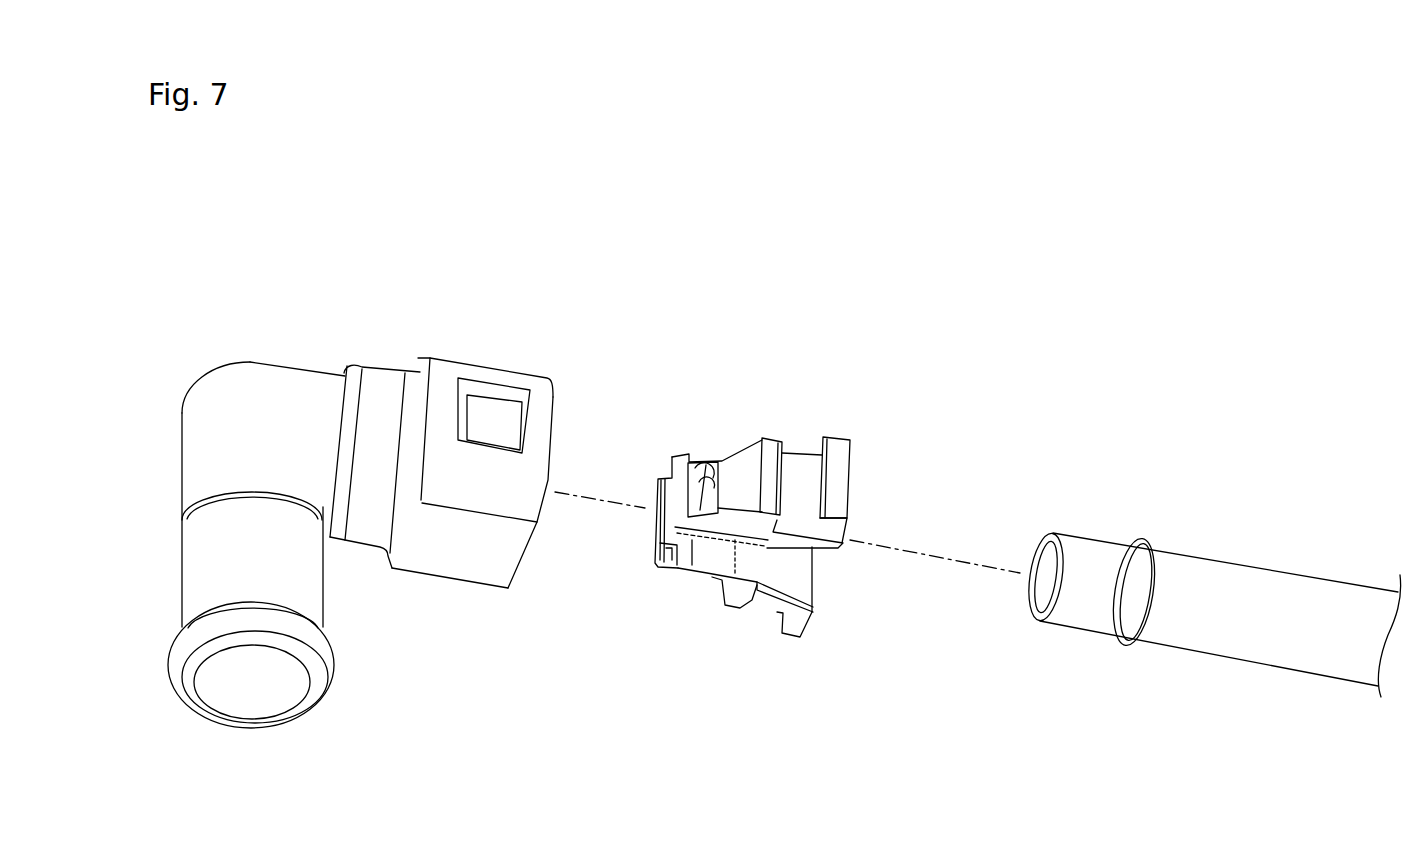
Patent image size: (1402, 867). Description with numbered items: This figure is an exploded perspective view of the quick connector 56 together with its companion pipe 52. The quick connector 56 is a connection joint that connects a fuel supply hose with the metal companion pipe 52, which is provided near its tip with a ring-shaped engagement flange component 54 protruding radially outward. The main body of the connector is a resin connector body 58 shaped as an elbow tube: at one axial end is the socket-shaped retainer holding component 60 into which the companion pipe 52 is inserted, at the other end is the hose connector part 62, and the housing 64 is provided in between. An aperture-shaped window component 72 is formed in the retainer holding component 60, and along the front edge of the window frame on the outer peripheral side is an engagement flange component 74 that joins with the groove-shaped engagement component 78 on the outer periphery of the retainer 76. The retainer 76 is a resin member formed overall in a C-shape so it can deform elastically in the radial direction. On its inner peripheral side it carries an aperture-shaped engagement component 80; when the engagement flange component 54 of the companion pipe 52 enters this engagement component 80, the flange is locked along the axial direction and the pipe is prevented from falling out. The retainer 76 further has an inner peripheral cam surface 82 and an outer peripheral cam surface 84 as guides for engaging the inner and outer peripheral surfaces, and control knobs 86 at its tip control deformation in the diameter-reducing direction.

The companion pipe 52 is at (1246, 548).
The engagement flange component 54 is at (1142, 602).
The quick connector 56 is at (613, 276).
The connector body 58 is at (316, 302).
The retainer holding component 60 is at (510, 361).
The hose connector part 62 is at (180, 570).
The housing 64 is at (242, 362).
The window component 72 is at (467, 405).
The engagement flange component 74 is at (547, 408).
The retainer 76 is at (773, 412).
The engagement component 78 is at (783, 472).
The engagement component 80 is at (697, 452).
The inner peripheral cam surface 82 is at (797, 568).
The outer peripheral cam surface 84 is at (745, 444).
The control knobs 86 is at (852, 452).